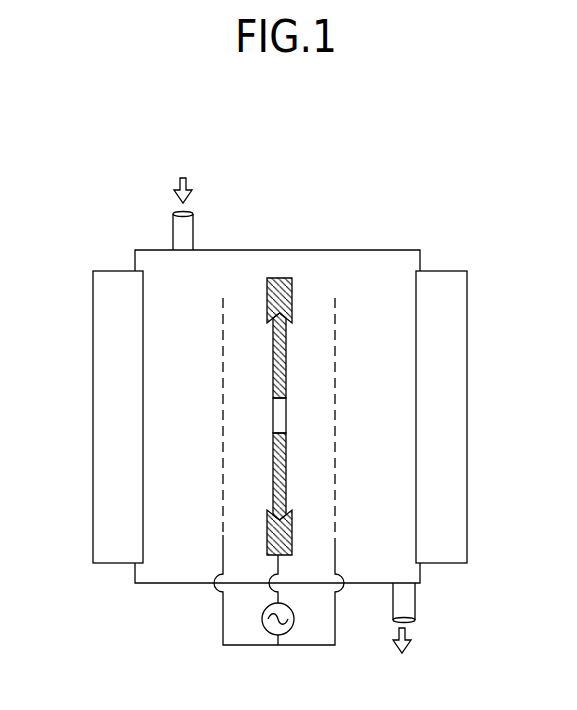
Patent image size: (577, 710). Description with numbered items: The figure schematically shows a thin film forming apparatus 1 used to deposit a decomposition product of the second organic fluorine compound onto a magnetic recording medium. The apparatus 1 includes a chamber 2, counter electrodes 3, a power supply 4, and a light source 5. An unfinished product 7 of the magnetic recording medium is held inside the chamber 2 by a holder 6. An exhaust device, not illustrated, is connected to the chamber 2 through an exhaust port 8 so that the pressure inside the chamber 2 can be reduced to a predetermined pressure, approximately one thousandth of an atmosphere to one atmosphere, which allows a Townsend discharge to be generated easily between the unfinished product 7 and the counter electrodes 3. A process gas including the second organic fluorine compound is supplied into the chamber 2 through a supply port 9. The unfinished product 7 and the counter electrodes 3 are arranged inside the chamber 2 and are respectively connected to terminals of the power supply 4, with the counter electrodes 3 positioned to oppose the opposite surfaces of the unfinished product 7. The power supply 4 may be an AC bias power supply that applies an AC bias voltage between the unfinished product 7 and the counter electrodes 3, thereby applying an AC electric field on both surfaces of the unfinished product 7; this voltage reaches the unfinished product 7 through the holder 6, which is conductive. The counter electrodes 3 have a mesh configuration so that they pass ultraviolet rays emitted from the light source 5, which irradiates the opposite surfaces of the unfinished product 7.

The thin film forming apparatus 1 is at (348, 185).
The chamber 2 is at (383, 249).
The counter electrodes 3 is at (335, 298).
The power supply 4 is at (292, 628).
The light source 5 is at (93, 383).
The holder 6 is at (267, 313).
The unfinished product of the magnetic recording medium 7 is at (285, 482).
The exhaust port 8 is at (415, 605).
The supply port 9 is at (170, 232).